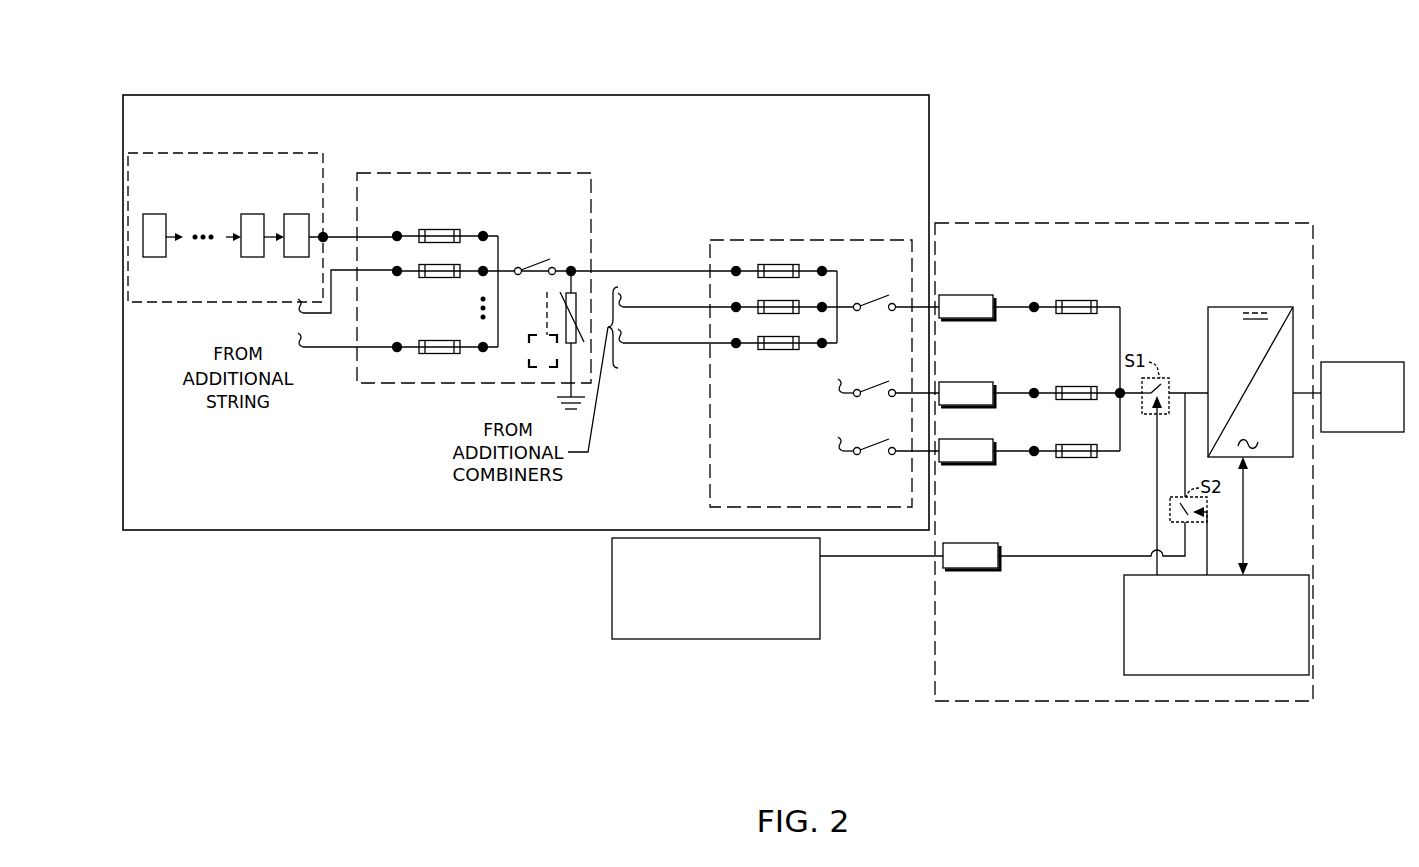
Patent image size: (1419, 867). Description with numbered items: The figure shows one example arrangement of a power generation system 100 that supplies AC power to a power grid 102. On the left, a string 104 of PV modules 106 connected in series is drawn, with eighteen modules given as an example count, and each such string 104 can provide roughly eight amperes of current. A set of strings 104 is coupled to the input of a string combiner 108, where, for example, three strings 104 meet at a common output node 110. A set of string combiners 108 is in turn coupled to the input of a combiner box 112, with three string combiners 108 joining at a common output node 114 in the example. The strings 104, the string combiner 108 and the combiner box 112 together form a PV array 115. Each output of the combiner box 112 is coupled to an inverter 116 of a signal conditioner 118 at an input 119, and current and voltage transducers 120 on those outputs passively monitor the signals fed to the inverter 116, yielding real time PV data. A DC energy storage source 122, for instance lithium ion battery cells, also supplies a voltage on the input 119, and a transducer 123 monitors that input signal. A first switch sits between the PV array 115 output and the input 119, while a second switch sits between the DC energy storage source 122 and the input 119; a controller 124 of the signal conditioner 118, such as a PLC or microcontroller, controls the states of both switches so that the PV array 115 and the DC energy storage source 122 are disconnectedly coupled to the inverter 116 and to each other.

The power generation system 100 is at (200, 62).
The power grid 102 is at (1348, 397).
The strings 104 is at (138, 303).
The PV modules 106 is at (153, 214).
The string combiner 108 is at (591, 190).
The common output node 110 is at (518, 275).
The combiner box 112 is at (815, 240).
The common output node 114 is at (857, 311).
The PV array 115 is at (526, 312).
The inverter 116 is at (1231, 307).
The signal conditioner 118 is at (1124, 462).
The input 119 is at (1186, 393).
The transducers 120 is at (964, 295).
The DC energy storage source 122 is at (777, 588).
The transducer 123 is at (960, 570).
The controller 124 is at (1216, 625).